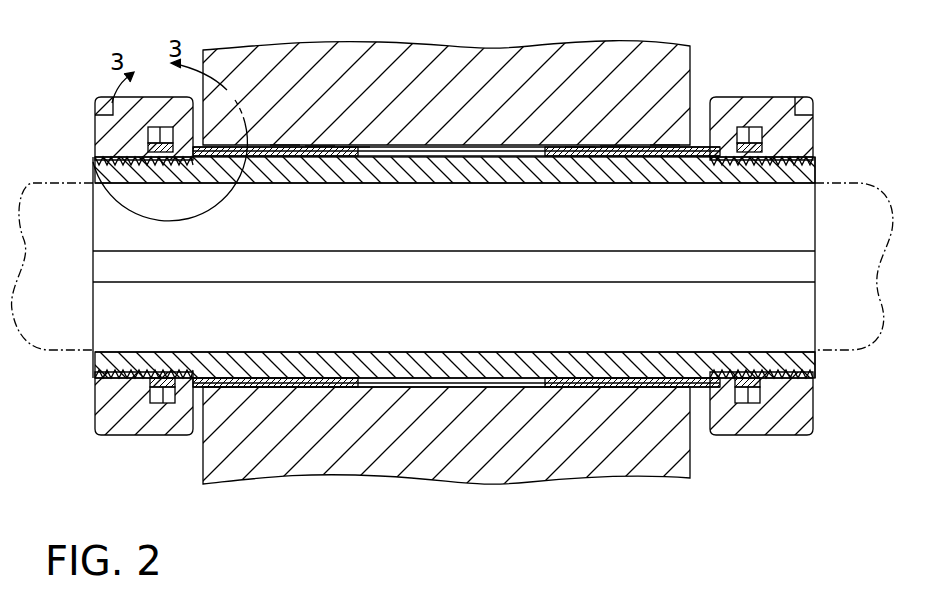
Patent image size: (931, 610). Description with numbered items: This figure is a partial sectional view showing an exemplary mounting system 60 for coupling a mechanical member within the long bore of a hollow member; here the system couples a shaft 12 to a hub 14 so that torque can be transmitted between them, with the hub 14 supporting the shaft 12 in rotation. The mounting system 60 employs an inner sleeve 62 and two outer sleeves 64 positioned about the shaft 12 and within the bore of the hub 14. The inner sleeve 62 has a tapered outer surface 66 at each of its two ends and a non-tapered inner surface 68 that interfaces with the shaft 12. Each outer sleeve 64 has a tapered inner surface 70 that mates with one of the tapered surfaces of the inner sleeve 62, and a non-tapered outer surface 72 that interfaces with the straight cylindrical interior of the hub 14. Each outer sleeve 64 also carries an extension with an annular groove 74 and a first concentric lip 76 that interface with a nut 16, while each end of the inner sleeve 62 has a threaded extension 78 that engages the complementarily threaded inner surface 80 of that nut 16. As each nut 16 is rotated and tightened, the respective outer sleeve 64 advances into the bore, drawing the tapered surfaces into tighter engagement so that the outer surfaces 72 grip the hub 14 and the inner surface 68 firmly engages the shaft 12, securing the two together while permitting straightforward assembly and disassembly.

The shaft 12 is at (850, 340).
The hub 14 is at (460, 292).
The nut 16 is at (130, 435).
The mounting system 60 is at (261, 494).
The inner sleeve 62 is at (456, 267).
The outer sleeve 64 is at (283, 145).
The tapered outer surface 66 is at (262, 152).
The non-tapered inner surface 68 is at (450, 185).
The tapered inner surface 70 is at (318, 147).
The non-tapered outer surface 72 is at (355, 147).
The annular groove 74 is at (177, 385).
The first concentric lip 76 is at (160, 392).
The threaded extension 78 is at (808, 145).
The threaded inner surface 80 is at (137, 372).